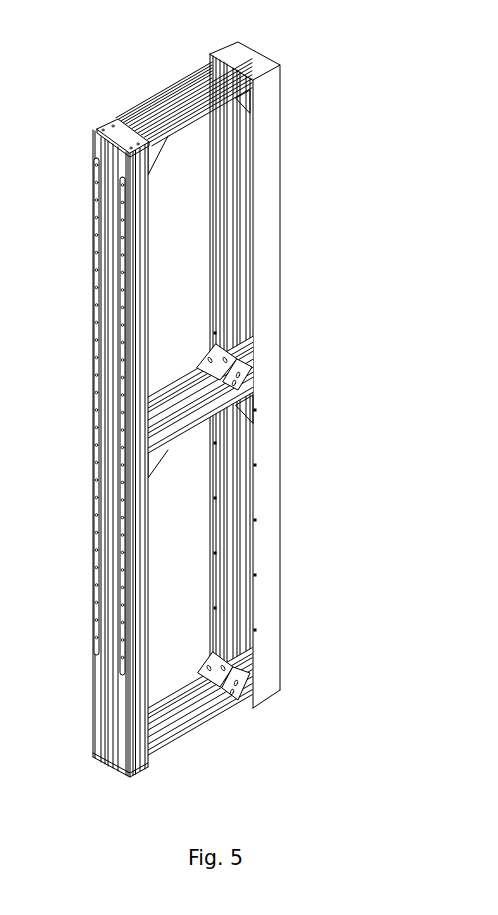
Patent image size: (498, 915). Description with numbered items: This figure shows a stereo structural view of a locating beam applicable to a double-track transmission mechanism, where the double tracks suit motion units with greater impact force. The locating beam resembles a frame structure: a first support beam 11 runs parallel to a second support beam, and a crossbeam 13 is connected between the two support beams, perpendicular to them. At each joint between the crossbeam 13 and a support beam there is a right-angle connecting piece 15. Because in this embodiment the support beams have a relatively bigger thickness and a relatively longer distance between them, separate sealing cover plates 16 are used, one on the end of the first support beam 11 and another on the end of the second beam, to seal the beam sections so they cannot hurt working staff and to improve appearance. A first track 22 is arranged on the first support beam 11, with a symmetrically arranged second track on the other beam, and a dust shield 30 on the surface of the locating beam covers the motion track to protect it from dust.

The first support beam 11 is at (88, 391).
The crossbeam 13 is at (184, 90).
The right-angle connecting piece 15 is at (285, 468).
The sealing cover plate 16 is at (114, 81).
The first track 22 is at (122, 185).
The dust shield 30 is at (305, 357).